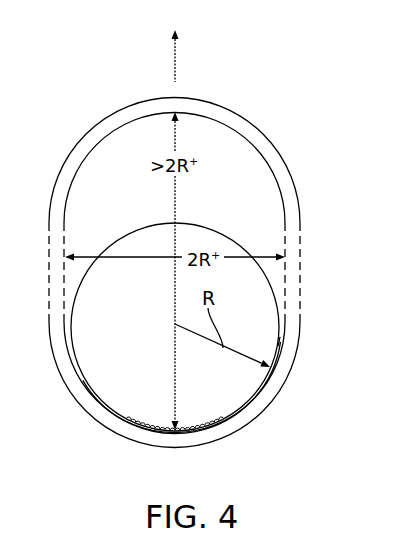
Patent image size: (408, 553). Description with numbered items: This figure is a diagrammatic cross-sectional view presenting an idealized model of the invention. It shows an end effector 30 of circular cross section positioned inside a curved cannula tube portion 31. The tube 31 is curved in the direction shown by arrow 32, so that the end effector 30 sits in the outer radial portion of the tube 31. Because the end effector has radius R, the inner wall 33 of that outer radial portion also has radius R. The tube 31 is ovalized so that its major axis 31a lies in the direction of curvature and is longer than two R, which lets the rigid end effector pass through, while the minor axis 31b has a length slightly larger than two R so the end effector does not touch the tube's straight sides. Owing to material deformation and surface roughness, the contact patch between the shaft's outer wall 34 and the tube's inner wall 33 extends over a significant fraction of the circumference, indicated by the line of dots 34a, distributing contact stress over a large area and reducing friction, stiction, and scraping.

The end effector 30 is at (95, 363).
The curved cannula tube portion 31 is at (93, 412).
The major axis 31a is at (175, 135).
The minor axis 31b is at (91, 258).
The arrow 32 is at (175, 54).
The inner wall 33 is at (280, 337).
The outer wall 34 is at (283, 350).
The line of dots 34a is at (198, 426).